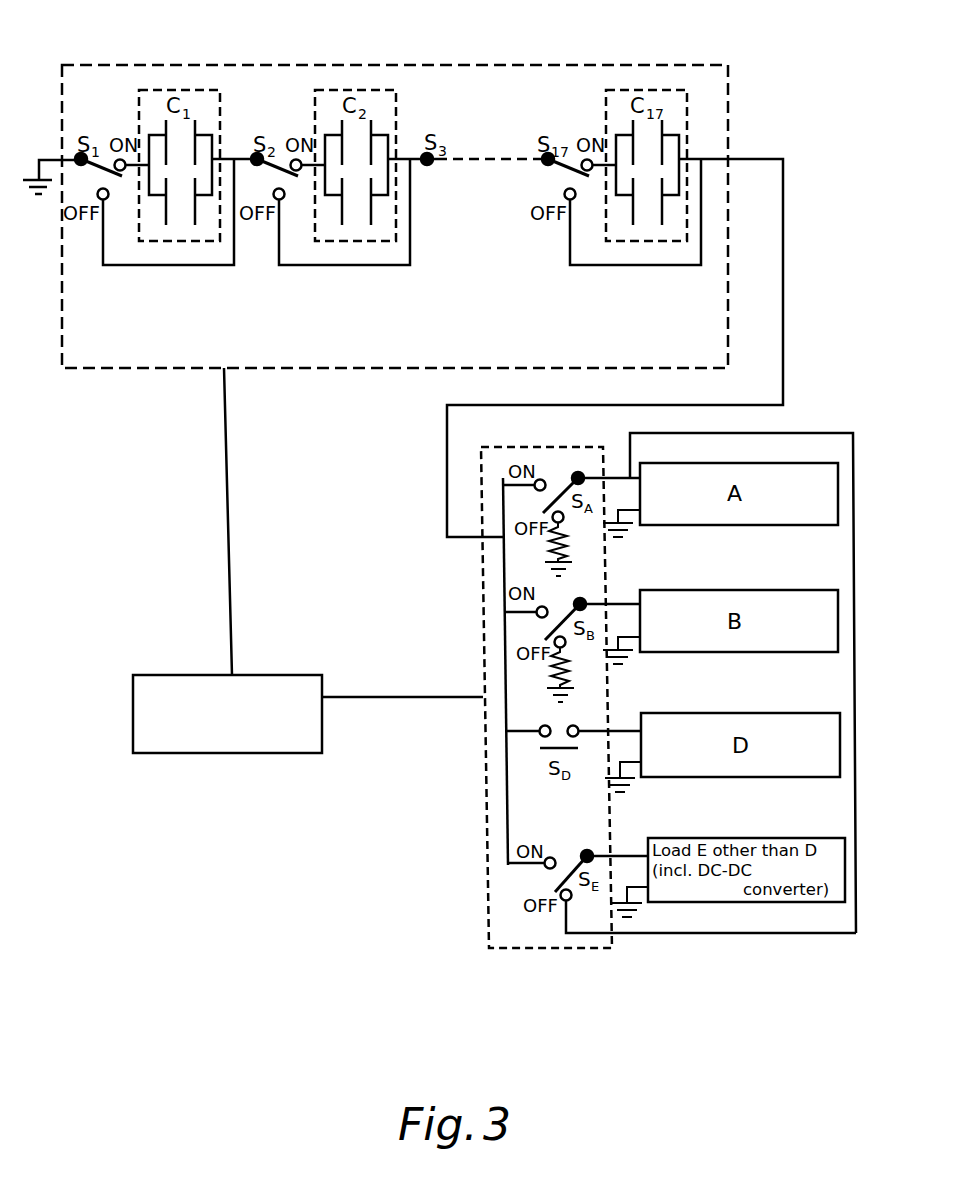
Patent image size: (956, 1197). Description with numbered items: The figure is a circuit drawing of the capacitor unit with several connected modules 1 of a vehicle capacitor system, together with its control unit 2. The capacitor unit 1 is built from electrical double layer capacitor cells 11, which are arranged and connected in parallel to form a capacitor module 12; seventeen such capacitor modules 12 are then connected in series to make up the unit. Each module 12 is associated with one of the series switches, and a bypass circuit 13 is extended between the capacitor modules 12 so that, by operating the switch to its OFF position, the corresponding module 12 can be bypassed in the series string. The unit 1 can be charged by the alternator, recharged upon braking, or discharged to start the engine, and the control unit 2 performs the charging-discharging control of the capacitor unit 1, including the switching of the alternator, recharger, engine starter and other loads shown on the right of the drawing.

The capacitor unit with several connected modules 1 is at (262, 370).
The control unit 2 is at (308, 560).
The cell 11 is at (165, 127).
The capacitor module 12 is at (220, 90).
The bypass circuit 13 is at (187, 266).